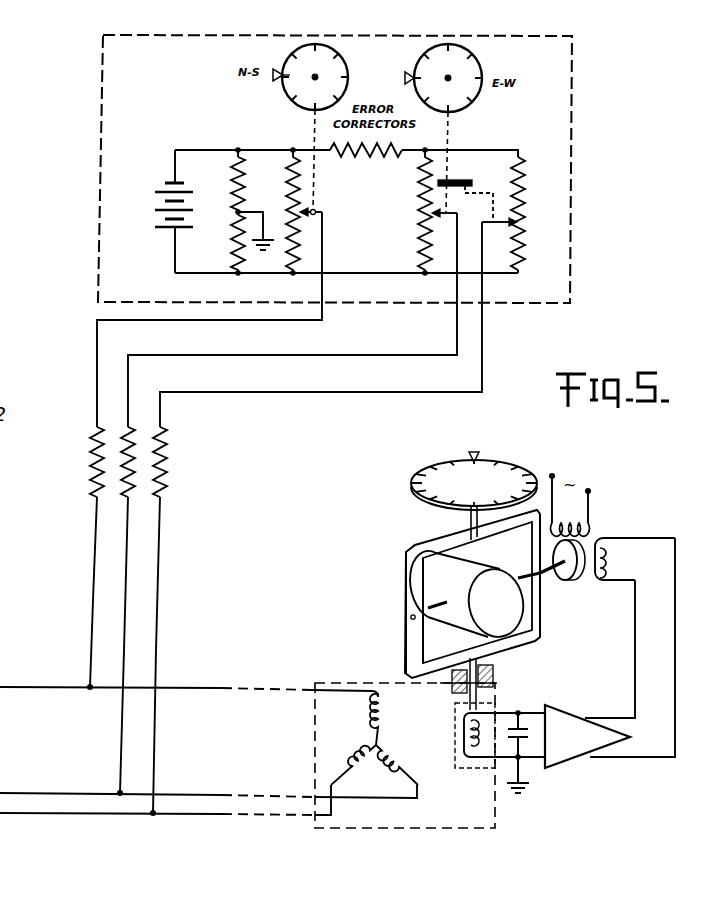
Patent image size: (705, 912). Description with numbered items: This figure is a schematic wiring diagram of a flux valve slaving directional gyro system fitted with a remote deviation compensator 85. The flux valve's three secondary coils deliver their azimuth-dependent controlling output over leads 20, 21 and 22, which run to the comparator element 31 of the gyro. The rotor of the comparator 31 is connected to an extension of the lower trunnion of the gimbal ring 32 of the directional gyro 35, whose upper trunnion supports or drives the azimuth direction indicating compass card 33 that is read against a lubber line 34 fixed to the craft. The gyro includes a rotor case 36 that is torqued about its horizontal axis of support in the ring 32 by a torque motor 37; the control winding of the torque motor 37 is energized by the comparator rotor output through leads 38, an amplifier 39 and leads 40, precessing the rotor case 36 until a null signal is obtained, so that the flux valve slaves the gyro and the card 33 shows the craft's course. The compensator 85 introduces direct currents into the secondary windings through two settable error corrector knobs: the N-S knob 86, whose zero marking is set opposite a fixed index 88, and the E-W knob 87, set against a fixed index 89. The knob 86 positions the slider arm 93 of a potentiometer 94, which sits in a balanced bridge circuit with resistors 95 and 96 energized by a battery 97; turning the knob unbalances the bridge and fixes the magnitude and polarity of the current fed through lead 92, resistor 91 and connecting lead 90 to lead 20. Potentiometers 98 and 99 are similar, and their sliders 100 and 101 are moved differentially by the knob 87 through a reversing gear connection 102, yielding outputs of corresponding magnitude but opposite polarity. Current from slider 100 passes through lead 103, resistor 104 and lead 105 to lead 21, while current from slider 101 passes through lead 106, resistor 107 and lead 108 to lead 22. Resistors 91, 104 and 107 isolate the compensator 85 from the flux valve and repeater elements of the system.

The lead 20 is at (32, 687).
The lead 21 is at (24, 793).
The lead 22 is at (18, 815).
The comparator element 31 is at (497, 828).
The gimbal ring 32 is at (408, 563).
The compass card 33 is at (517, 465).
The lubber line 34 is at (480, 454).
The directional gyro 35 is at (433, 531).
The rotor case 36 is at (440, 585).
The torque motor 37 is at (599, 532).
The leads 38 is at (498, 756).
The amplifier 39 is at (563, 707).
The leads 40 is at (675, 636).
The deviation compensator 85 is at (572, 202).
The N-S error corrector knob 86 is at (348, 75).
The E-W error corrector knob 87 is at (482, 78).
The fixed index 88 is at (276, 82).
The fixed index 89 is at (405, 78).
The connecting lead 90 is at (94, 552).
The resistor 91 is at (90, 459).
The lead 92 is at (213, 321).
The slider arm 93 is at (316, 212).
The potentiometer 94 is at (278, 207).
The resistor 95 is at (236, 179).
The resistor 96 is at (236, 261).
The battery 97 is at (161, 227).
The potentiometer 98 is at (414, 209).
The potentiometer 99 is at (526, 207).
The slider 100 is at (444, 211).
The slider 101 is at (489, 226).
The reversing gear connection 102 is at (461, 174).
The lead 103 is at (455, 329).
The resistor 104 is at (127, 432).
The lead 105 is at (127, 553).
The lead 106 is at (482, 352).
The resistor 107 is at (163, 462).
The lead 108 is at (162, 573).